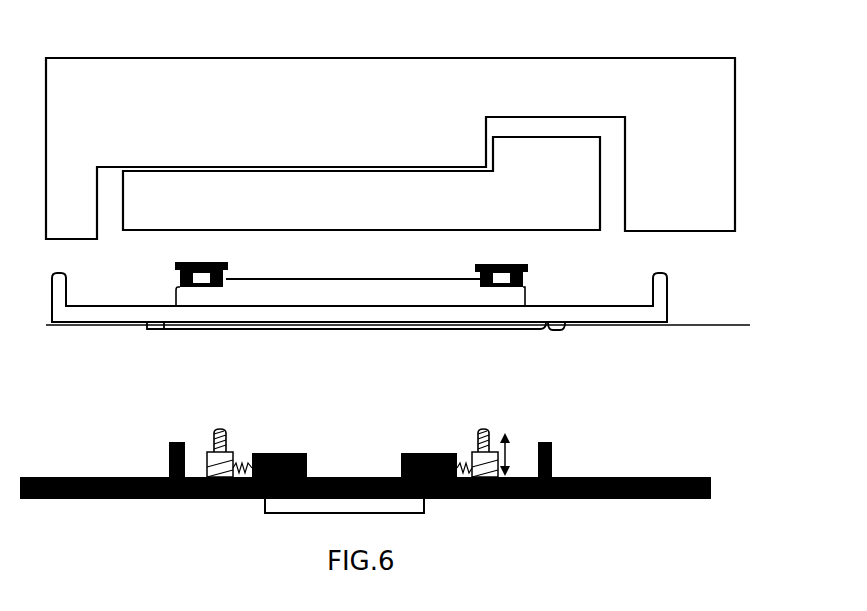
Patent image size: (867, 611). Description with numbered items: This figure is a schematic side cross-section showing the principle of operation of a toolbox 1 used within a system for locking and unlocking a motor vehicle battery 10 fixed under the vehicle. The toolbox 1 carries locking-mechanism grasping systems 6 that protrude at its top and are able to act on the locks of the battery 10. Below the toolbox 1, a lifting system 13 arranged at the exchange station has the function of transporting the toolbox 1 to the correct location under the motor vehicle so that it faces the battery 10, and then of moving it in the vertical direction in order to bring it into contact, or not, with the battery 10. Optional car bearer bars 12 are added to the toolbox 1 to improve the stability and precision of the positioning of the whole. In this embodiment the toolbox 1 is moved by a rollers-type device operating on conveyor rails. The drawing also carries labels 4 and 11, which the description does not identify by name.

The toolbox 1 is at (490, 302).
The element 4 is at (150, 3).
The locking-mechanism grasping systems 6 is at (528, 279).
The battery 10 is at (582, 183).
The cover / hood 11 is at (665, 93).
The car bearer bars 12 is at (668, 292).
The lifting system 13 is at (629, 500).